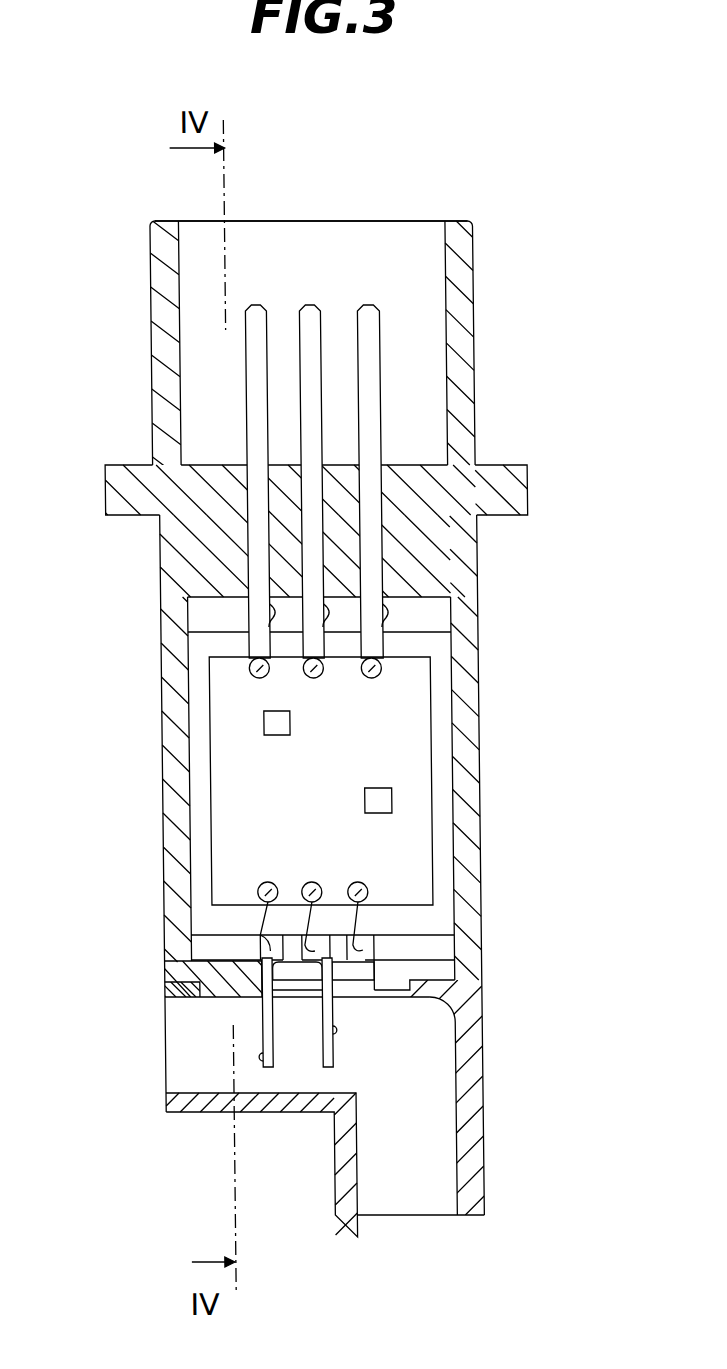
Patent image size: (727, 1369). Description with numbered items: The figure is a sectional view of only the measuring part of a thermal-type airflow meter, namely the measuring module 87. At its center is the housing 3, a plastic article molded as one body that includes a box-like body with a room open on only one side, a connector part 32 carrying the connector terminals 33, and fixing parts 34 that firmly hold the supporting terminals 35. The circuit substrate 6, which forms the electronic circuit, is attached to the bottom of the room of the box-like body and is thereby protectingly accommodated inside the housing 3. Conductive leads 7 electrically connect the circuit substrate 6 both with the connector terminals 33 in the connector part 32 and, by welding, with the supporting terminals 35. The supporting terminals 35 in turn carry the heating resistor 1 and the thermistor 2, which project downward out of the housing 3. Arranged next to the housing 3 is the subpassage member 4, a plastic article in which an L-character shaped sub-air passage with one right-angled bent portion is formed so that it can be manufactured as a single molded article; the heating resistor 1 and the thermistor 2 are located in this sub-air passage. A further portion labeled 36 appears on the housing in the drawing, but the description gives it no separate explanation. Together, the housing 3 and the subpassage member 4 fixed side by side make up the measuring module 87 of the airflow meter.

The heating resistor 1 is at (248, 1057).
The thermistor 2 is at (324, 1031).
The housing 3 is at (154, 790).
The subpassage member 4 is at (460, 1143).
The circuit substrate 6 is at (362, 760).
The conductive leads 7 is at (231, 641).
The connector part 32 is at (452, 323).
The connector terminals 33 is at (367, 305).
The fixing parts 34 is at (212, 948).
The supporting terminals 35 is at (251, 1022).
The flange 36 is at (505, 470).
The measuring module 87 is at (296, 221).